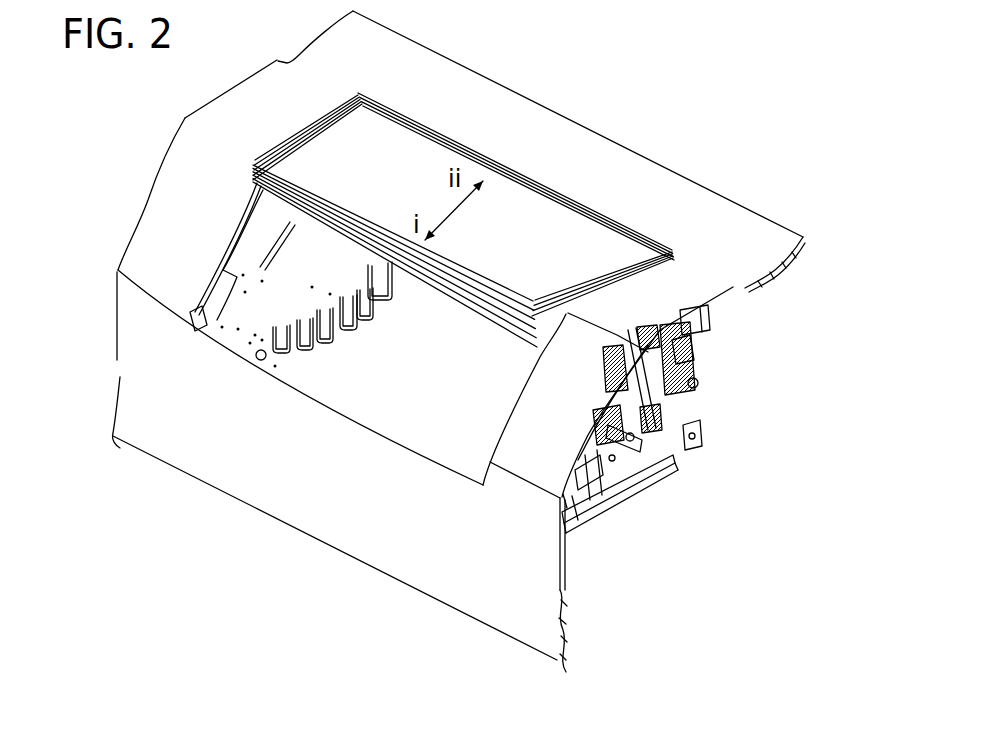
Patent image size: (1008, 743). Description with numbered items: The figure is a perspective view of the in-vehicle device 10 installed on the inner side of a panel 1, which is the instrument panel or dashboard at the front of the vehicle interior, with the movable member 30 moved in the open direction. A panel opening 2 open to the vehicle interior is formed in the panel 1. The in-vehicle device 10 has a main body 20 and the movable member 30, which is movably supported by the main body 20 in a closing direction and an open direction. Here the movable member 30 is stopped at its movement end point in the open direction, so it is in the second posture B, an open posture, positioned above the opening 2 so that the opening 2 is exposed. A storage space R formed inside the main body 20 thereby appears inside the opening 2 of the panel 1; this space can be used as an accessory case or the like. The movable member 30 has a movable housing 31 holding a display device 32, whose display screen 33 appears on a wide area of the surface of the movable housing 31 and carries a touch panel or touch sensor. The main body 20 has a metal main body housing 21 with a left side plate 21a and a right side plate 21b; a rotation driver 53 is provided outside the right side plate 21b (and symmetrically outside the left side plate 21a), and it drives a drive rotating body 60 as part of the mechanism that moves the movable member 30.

The panel 1 is at (393, 567).
The panel opening 2 is at (348, 412).
The in-vehicle device 10 is at (673, 489).
The main body 20 is at (607, 518).
The main body housing 21 is at (690, 407).
The left side plate 21a is at (350, 275).
The right side plate 21b is at (573, 510).
The movable member 30 is at (472, 150).
The movable housing 31 is at (668, 240).
The display device 32 is at (578, 227).
The display screen 33 is at (530, 227).
The rotation driver 53 is at (689, 362).
The drive rotating body 60 is at (660, 414).
The second posture B is at (640, 286).
The storage space R is at (450, 417).